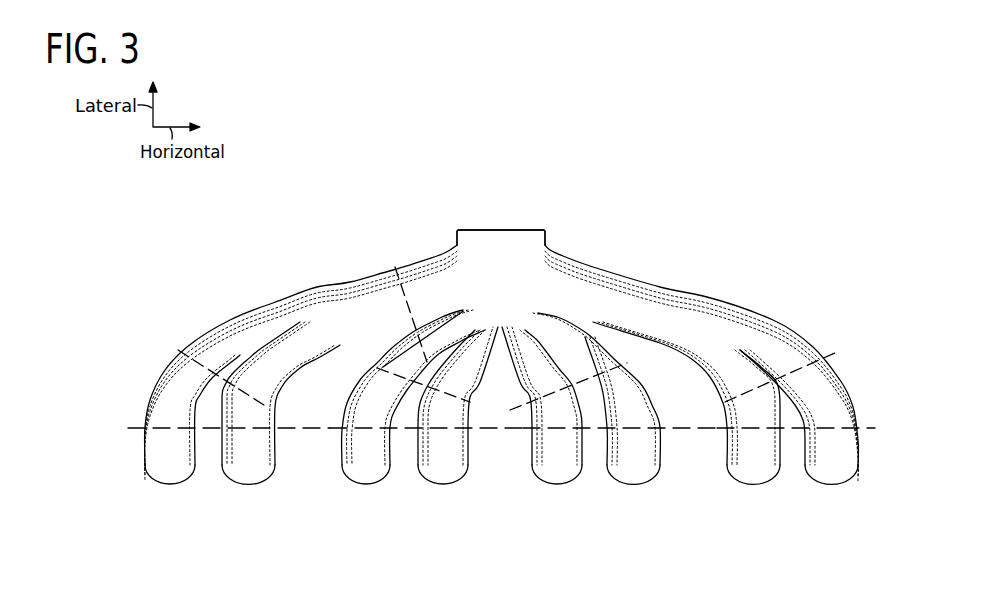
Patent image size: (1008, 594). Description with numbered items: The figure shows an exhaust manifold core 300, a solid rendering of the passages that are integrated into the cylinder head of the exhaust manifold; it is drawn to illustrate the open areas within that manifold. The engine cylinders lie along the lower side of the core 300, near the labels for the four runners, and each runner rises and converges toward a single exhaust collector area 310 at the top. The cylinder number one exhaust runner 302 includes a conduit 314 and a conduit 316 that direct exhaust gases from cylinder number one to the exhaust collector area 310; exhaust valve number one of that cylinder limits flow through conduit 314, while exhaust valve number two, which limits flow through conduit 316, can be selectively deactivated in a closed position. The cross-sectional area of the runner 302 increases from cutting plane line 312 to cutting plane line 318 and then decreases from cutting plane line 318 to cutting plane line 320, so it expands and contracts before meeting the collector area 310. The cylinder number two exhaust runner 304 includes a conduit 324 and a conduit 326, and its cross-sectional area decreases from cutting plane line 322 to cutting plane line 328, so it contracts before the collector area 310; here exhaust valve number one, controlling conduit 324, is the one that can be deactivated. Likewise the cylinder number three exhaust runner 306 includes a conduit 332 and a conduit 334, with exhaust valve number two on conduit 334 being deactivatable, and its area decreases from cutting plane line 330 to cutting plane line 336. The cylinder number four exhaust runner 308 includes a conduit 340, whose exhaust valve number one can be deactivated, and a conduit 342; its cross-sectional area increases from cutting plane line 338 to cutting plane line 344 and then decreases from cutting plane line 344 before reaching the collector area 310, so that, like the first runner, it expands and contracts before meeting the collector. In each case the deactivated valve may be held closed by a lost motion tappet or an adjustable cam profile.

The exhaust manifold core 300 is at (616, 206).
The cylinder number one exhaust runner 302 is at (283, 399).
The cylinder number two exhaust runner 304 is at (407, 432).
The cylinder number three exhaust runner 306 is at (590, 433).
The cylinder number four exhaust runner 308 is at (724, 399).
The exhaust collector area 310 is at (485, 258).
The cutting plane line 312 is at (128, 428).
The conduit 314 is at (165, 378).
The conduit 316 is at (275, 477).
The cutting plane line 318 is at (176, 349).
The cutting plane line 320 is at (389, 252).
The cutting plane line 322 is at (330, 428).
The conduit 324 is at (363, 383).
The conduit 326 is at (447, 483).
The cutting plane line 328 is at (383, 367).
The cutting plane line 330 is at (523, 430).
The conduit 332 is at (550, 486).
The conduit 334 is at (633, 375).
The cutting plane line 336 is at (528, 403).
The cutting plane line 338 is at (717, 429).
The conduit 340 is at (745, 485).
The conduit 342 is at (855, 399).
The cutting plane line 344 is at (718, 410).